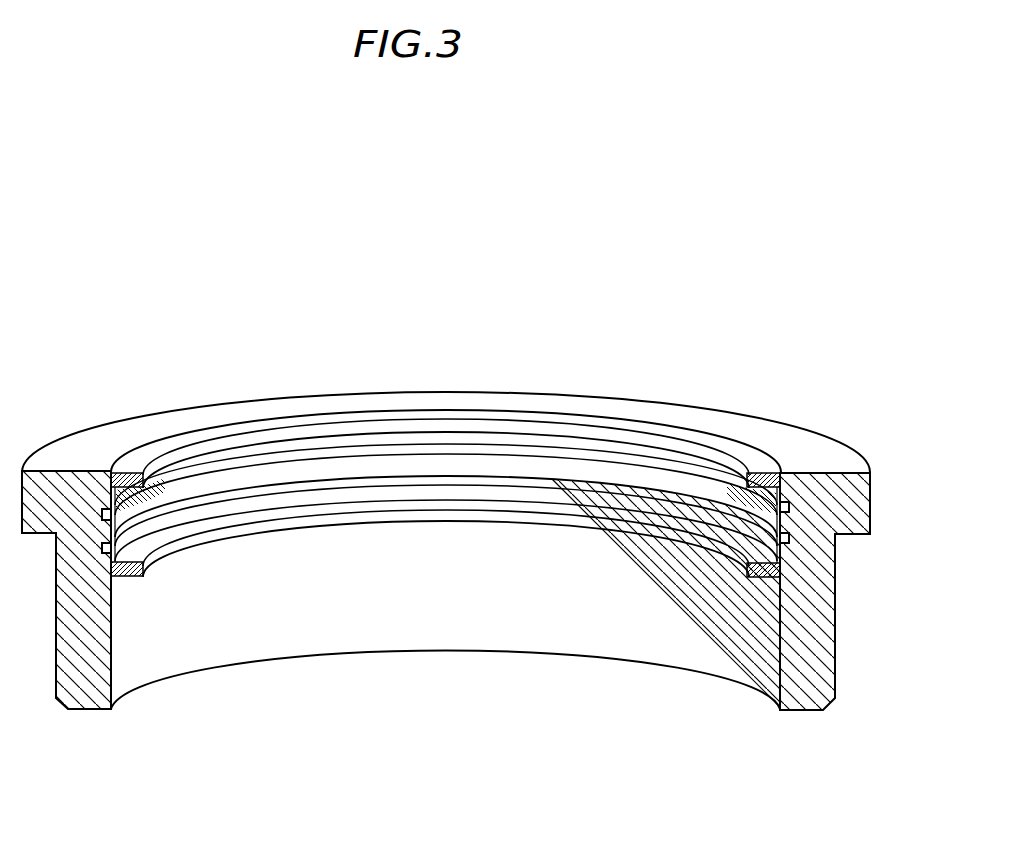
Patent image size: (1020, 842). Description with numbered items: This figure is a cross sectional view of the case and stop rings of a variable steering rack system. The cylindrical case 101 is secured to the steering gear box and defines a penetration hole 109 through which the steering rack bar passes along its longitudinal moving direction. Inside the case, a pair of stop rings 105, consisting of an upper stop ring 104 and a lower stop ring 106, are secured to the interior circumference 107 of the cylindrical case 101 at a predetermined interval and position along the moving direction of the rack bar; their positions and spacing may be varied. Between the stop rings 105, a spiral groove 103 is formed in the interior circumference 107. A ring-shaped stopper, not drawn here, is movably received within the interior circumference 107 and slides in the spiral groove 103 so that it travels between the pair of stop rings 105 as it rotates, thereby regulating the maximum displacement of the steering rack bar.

The cylindrical case 101 is at (835, 615).
The spiral groove 103 is at (729, 505).
The upper stop ring 104 is at (164, 448).
The pair of stop rings 105 is at (445, 427).
The lower stop ring 106 is at (218, 520).
The interior circumference 107 is at (337, 625).
The penetration hole 109 is at (547, 672).